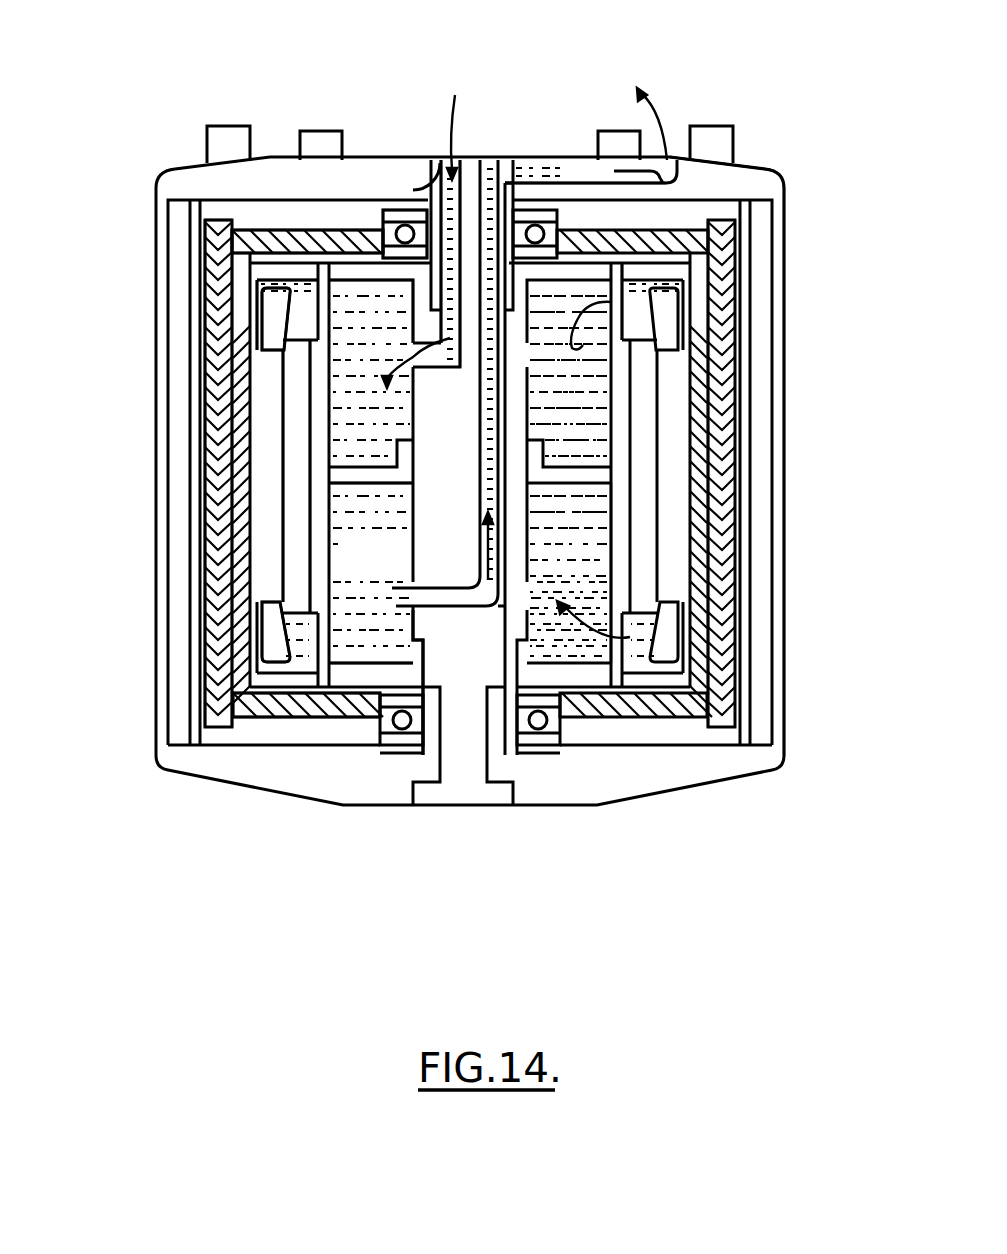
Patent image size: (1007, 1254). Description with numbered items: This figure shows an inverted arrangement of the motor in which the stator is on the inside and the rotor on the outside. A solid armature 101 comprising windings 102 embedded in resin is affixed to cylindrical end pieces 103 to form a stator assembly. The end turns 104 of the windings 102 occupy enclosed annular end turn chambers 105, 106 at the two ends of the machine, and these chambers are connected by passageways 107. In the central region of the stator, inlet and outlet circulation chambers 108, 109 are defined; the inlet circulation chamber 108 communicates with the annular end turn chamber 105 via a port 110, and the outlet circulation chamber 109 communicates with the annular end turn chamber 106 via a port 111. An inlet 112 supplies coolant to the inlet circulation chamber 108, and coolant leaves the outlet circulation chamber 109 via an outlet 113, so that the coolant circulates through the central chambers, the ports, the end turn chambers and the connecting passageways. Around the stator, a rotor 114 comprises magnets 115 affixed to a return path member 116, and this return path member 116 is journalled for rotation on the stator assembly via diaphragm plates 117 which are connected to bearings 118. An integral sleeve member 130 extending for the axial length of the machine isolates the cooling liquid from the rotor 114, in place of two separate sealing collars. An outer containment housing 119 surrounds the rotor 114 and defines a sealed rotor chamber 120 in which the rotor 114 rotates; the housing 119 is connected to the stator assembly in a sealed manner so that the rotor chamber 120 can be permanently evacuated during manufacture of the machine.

The solid armature 101 is at (267, 562).
The windings 102 is at (286, 494).
The cylindrical end pieces 103 is at (232, 232).
The end turns 104 is at (268, 316).
The annular end turn chamber 105 is at (298, 298).
The annular end turn chamber 106 is at (297, 647).
The passageways 107 is at (310, 413).
The inlet circulation chamber 108 is at (392, 334).
The outlet circulation chamber 109 is at (405, 575).
The port 110 is at (625, 302).
The port 111 is at (610, 645).
The inlet 112 is at (414, 158).
The outlet 113 is at (757, 176).
The rotor 114 is at (317, 278).
The magnets 115 is at (240, 477).
The return path member 116 is at (213, 507).
The diaphragm plates 117 is at (272, 272).
The bearings 118 is at (397, 202).
The outer containment housing 119 is at (778, 255).
The rotor chamber 120 is at (588, 212).
The integral sleeve member 130 is at (687, 503).